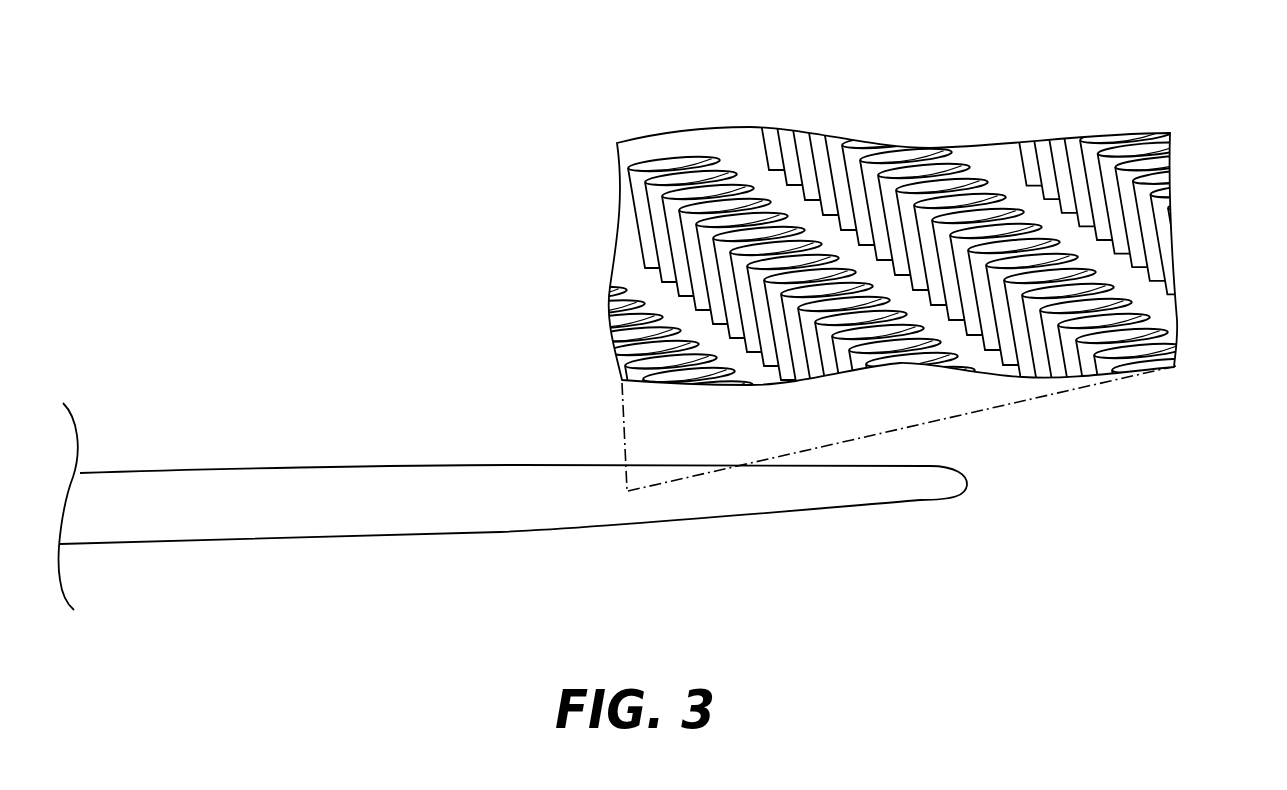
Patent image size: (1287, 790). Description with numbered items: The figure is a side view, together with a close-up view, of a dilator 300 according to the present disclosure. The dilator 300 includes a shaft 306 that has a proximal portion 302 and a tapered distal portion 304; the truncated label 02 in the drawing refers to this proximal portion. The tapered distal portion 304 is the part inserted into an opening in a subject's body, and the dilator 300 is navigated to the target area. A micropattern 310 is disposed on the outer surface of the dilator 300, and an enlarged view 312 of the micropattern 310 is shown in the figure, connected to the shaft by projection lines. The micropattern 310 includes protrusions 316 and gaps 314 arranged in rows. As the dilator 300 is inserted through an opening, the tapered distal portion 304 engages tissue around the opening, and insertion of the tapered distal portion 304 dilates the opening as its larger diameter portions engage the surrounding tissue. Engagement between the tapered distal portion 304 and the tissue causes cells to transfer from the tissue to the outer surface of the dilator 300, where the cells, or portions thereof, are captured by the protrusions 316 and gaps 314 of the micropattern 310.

The dilator 300 is at (429, 406).
The proximal portion 302 is at (495, 551).
The elongate body 02 is at (228, 519).
The tapered distal portion 304 is at (781, 499).
The shaft 306 is at (372, 522).
The micropattern 310 is at (1019, 140).
The enlarged view 312 is at (762, 128).
The gaps 314 is at (787, 200).
The protrusions 316 is at (1163, 283).